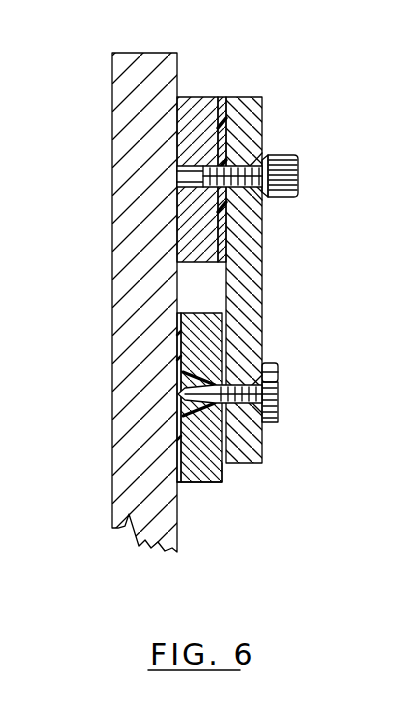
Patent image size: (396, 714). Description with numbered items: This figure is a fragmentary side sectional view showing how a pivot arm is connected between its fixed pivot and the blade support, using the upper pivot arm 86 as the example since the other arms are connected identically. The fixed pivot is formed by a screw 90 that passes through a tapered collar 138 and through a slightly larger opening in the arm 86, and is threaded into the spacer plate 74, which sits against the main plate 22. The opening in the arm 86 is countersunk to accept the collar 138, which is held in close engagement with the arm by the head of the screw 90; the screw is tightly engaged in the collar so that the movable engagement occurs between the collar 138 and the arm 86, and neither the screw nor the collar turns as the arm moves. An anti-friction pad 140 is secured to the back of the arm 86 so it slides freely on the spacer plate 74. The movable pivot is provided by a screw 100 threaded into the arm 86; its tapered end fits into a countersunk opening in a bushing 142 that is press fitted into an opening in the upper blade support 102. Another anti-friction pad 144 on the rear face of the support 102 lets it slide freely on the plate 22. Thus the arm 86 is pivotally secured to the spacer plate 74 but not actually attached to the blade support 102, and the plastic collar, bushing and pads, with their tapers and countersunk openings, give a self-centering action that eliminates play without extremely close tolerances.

The plate 22 is at (113, 160).
The spacer plate 74 is at (199, 97).
The anti-friction pad 140 is at (223, 97).
The upper pivot arm 86 is at (243, 285).
The screw 90 is at (298, 172).
The tapered collar 138 is at (268, 203).
The bushing 142 is at (212, 378).
The screw 100 is at (280, 392).
The upper blade support 102 is at (204, 484).
The anti-friction pad 144 is at (177, 487).